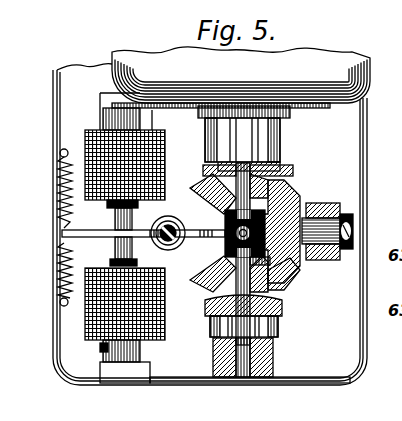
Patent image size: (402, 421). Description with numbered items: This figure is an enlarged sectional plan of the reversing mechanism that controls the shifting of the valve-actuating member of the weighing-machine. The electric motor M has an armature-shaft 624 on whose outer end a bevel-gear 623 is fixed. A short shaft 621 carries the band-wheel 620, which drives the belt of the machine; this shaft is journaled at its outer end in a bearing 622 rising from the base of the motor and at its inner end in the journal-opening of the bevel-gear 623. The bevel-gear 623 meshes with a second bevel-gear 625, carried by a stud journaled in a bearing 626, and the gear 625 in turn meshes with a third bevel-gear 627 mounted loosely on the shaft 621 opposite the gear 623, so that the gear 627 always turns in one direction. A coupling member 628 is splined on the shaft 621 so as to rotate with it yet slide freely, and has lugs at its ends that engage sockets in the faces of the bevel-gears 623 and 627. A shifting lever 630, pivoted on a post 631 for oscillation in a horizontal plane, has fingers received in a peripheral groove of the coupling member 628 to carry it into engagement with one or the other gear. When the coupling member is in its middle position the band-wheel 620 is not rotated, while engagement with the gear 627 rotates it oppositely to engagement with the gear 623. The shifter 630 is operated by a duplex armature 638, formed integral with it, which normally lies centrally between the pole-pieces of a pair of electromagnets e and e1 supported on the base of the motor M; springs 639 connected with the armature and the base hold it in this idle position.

The electric motor M is at (252, 77).
The electromagnet e1 is at (95, 142).
The electromagnet e is at (88, 325).
The spring 639 is at (55, 258).
The duplex armature 638 is at (115, 254).
The shifting lever 630 is at (192, 216).
The post 631 is at (207, 240).
The armature-shaft 624 is at (255, 166).
The bevel-gear 623 is at (280, 180).
The bevel-gear 625 is at (290, 204).
The bearing 626 is at (347, 208).
The coupling member 628 is at (292, 272).
The bevel-gear 627 is at (270, 284).
The band-wheel 620 is at (283, 319).
The short shaft 621 is at (276, 350).
The bearing 622 is at (223, 357).